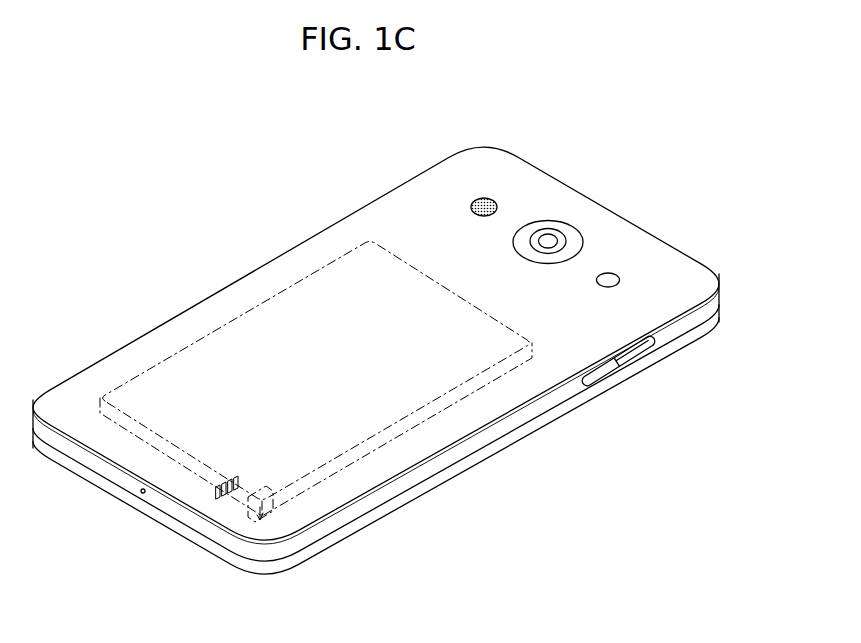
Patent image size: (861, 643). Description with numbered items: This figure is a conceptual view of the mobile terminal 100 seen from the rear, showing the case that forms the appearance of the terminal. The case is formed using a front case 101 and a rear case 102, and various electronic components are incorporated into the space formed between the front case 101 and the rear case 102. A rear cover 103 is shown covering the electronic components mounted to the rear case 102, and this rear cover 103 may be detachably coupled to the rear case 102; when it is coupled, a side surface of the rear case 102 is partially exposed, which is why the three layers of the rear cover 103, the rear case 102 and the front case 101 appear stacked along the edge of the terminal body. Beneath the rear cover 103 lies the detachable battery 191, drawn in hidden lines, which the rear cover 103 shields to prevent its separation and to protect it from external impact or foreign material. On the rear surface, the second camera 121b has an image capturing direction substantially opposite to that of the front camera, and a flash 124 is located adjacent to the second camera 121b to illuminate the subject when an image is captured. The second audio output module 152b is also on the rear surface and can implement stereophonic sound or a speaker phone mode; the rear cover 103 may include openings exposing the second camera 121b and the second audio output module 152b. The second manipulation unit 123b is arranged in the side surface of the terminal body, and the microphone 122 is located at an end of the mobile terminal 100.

The mobile terminal 100 is at (245, 219).
The front case 101 is at (719, 319).
The rear case 102 is at (719, 297).
The rear cover 103 is at (719, 275).
The second camera 121b is at (551, 240).
The microphone 122 is at (141, 493).
The second manipulation unit 123b is at (604, 374).
The flash 124 is at (613, 277).
The second audio output module 152b is at (492, 200).
The battery 191 is at (403, 437).